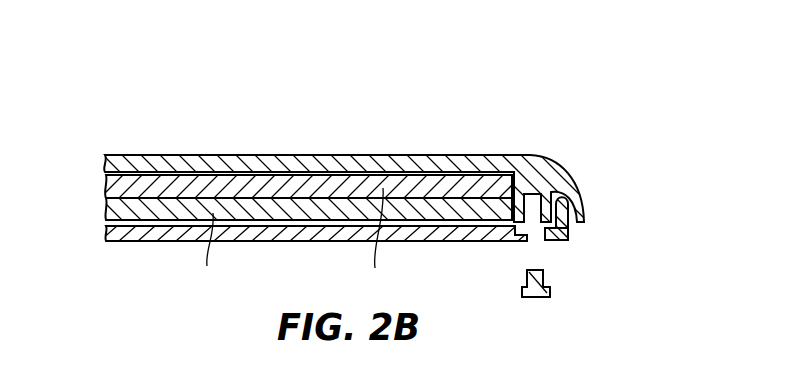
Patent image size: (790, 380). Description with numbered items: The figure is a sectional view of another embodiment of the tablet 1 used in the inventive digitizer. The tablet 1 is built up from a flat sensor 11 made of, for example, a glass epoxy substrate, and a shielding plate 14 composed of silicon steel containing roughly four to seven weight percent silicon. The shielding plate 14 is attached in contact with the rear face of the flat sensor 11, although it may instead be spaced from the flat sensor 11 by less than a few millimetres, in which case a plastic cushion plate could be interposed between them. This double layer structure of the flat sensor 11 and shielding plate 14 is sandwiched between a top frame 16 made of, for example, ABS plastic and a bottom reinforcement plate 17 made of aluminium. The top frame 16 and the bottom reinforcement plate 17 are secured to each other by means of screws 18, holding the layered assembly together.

The tablet 1 is at (357, 153).
The flat sensor 11 is at (476, 187).
The shielding plate 14 is at (107, 215).
The top frame 16 is at (553, 181).
The bottom reinforcement plate 17 is at (107, 231).
The screws 18 is at (545, 276).